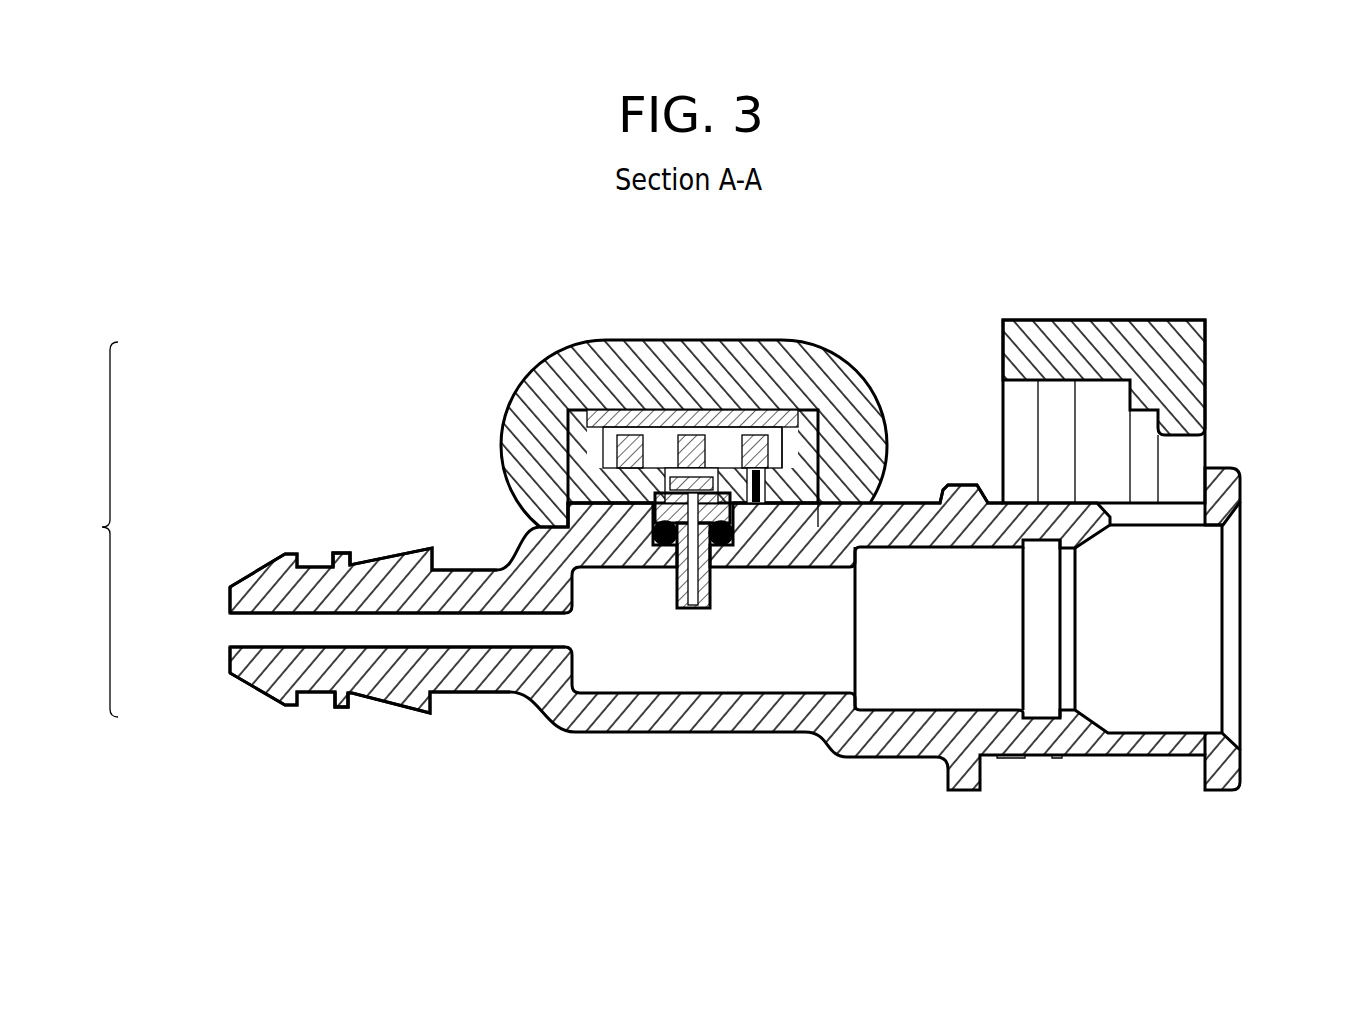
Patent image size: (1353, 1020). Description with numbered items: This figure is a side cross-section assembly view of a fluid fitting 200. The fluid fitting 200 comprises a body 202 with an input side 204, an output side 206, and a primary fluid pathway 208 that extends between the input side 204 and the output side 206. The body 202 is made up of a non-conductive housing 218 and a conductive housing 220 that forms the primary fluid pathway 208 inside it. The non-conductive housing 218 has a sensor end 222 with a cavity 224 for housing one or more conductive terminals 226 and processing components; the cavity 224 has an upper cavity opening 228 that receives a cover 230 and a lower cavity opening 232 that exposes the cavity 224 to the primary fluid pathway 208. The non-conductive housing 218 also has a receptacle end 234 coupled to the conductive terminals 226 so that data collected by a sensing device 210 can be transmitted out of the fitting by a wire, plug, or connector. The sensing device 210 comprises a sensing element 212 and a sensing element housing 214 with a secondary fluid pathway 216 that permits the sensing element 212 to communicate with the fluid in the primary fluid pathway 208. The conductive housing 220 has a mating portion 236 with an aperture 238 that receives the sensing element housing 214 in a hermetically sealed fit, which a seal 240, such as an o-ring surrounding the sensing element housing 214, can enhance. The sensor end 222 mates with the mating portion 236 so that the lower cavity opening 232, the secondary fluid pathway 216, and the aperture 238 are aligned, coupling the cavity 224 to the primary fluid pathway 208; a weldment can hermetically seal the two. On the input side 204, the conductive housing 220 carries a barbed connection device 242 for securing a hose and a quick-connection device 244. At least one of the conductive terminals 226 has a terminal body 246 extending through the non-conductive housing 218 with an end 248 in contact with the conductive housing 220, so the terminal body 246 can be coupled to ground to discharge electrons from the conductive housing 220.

The fluid fitting 200 is at (697, 467).
The body 202 is at (84, 529).
The input side 204 is at (1275, 607).
The output side 206 is at (172, 686).
The primary fluid pathway 208 is at (220, 628).
The sensing device 210 is at (607, 522).
The sensing element 212 is at (667, 470).
The sensing element housing 214 is at (700, 608).
The secondary fluid pathway 216 is at (686, 619).
The non-conductive housing 218 is at (846, 368).
The conductive housing 220 is at (690, 735).
The sensor end 222 is at (834, 432).
The cavity 224 is at (652, 432).
The conductive terminals 226 is at (693, 432).
The upper cavity opening 228 is at (611, 420).
The cover 230 is at (753, 432).
The lower cavity opening 232 is at (782, 452).
The receptacle end 234 is at (510, 330).
The mating portion 236 is at (852, 530).
The aperture 238 is at (712, 560).
The seal 240 is at (665, 548).
The barbed connection device 242 is at (341, 724).
The quick-connection device 244 is at (1186, 293).
The terminal body 246 is at (737, 478).
The end 248 is at (818, 510).